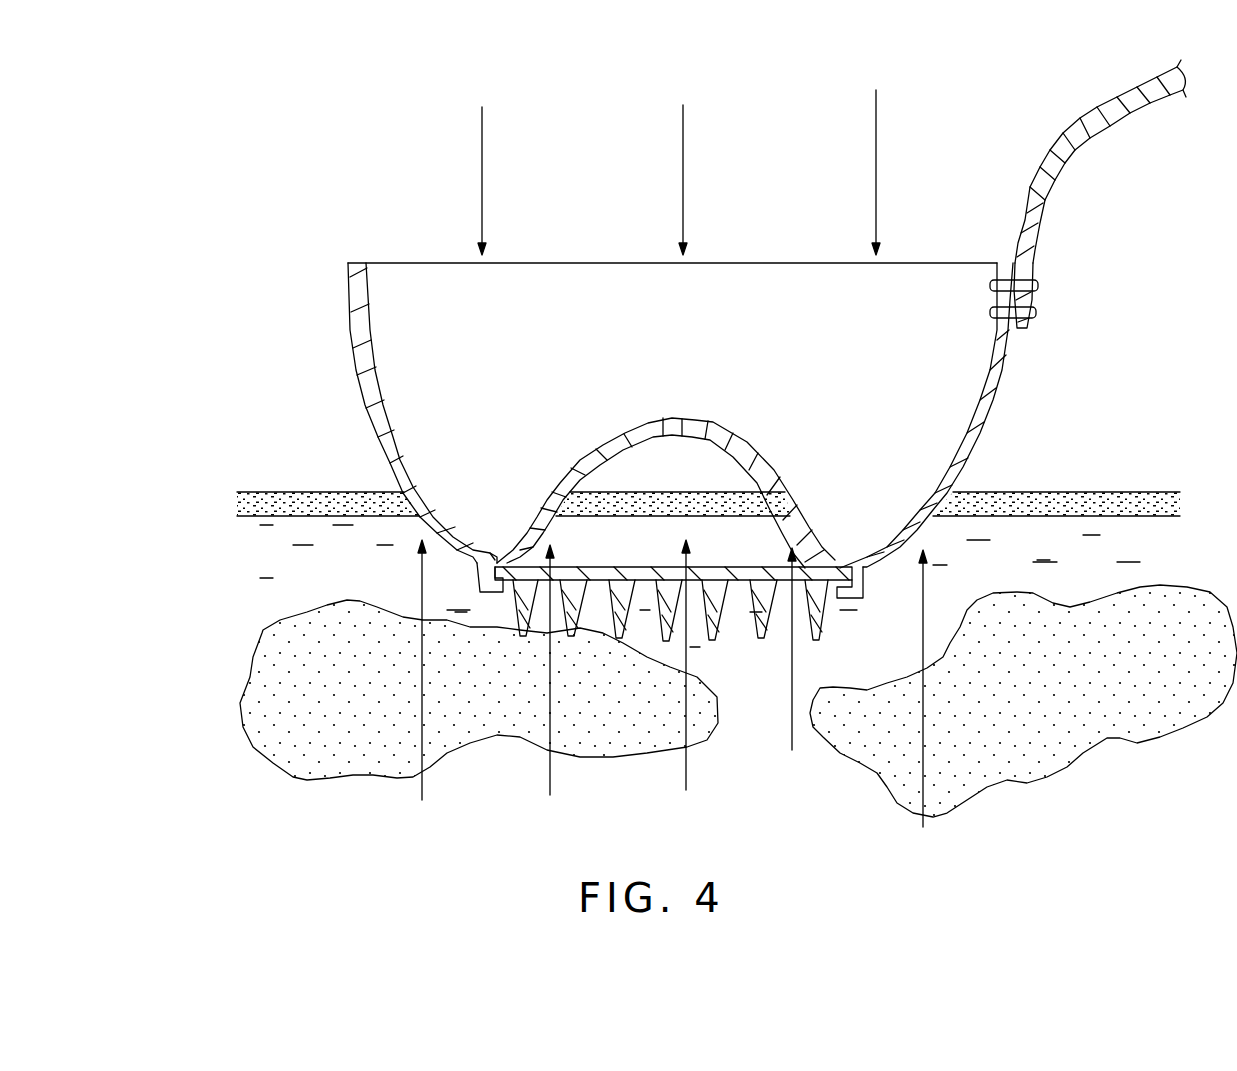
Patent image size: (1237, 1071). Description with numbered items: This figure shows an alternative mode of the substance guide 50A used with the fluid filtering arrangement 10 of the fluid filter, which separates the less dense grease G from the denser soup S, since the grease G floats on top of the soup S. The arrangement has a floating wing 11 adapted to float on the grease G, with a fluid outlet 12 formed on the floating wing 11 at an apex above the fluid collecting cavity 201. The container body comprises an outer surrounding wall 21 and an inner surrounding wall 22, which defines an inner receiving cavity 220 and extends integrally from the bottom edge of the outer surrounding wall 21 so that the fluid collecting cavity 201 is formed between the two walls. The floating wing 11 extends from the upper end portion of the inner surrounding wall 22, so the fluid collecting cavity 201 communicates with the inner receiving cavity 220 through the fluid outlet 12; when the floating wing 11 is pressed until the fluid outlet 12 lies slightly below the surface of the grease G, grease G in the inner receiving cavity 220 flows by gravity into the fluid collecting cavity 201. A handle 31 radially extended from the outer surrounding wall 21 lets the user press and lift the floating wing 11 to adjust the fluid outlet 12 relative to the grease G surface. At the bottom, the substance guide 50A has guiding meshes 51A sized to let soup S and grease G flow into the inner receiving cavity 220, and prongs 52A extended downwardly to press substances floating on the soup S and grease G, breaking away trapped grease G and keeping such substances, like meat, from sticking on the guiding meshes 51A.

The fluid filtering arrangement 10 is at (572, 180).
The floating wing 11 is at (650, 413).
The fluid outlet 12 is at (677, 416).
The outer surrounding wall 21 is at (360, 361).
The inner surrounding wall 22 is at (580, 457).
The fluid collecting cavity 201 is at (838, 420).
The inner receiving cavity 220 is at (607, 538).
The handle 31 is at (1052, 187).
The grease G is at (697, 503).
The soup S is at (1060, 540).
The substance guide 50A is at (695, 727).
The guiding meshes 51A is at (737, 582).
The prongs 52A is at (712, 585).